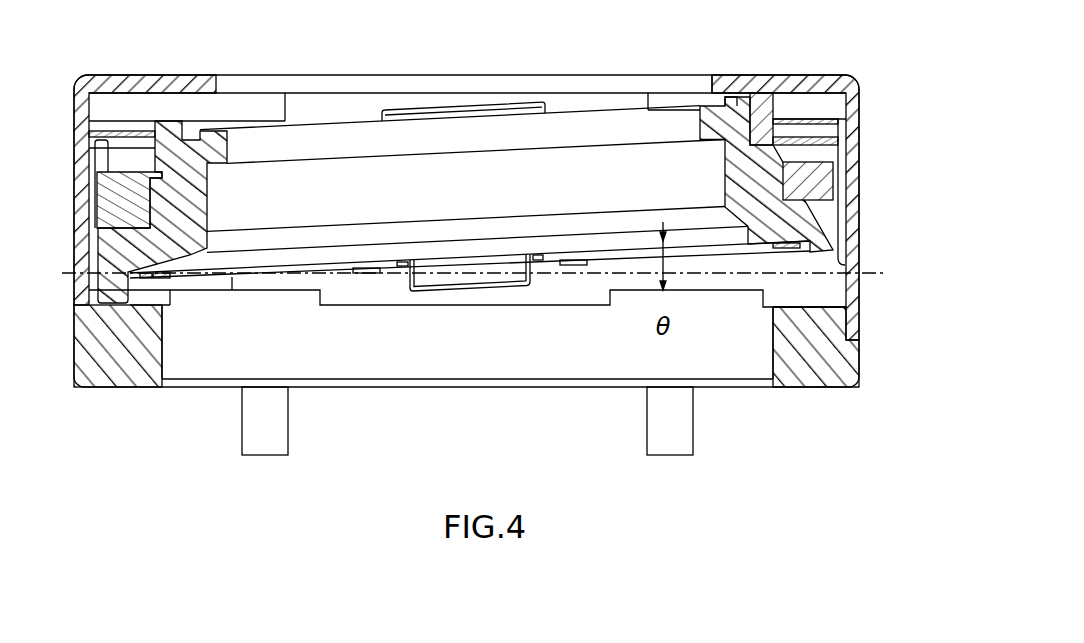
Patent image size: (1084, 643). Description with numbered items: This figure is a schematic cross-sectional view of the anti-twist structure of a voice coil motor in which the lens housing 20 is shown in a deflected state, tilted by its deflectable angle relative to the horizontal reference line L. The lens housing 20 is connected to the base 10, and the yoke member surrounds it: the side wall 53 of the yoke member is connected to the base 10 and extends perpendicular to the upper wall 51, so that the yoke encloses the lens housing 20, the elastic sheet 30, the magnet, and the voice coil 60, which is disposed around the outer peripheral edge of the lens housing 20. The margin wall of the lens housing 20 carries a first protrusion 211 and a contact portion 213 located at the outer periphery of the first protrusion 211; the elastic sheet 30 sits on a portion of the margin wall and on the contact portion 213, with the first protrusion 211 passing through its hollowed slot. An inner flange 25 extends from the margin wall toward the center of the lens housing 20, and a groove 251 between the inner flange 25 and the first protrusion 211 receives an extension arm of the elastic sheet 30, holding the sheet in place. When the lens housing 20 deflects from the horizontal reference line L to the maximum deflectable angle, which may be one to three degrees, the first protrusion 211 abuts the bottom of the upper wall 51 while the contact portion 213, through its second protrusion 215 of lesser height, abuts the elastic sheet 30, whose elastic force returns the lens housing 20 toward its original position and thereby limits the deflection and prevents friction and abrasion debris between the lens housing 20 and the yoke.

The base 10 is at (840, 348).
The lens housing 20 is at (838, 222).
The inner flange 25 is at (661, 124).
The groove 251 is at (726, 104).
The first protrusion 211 is at (771, 104).
The upper wall 51 is at (823, 80).
The elastic sheet 30 is at (812, 104).
The second protrusion 215 is at (836, 122).
The contact portion 213 is at (838, 141).
The voice coil 60 is at (828, 182).
The side wall 53 is at (842, 310).
The horizontal reference line L is at (484, 277).